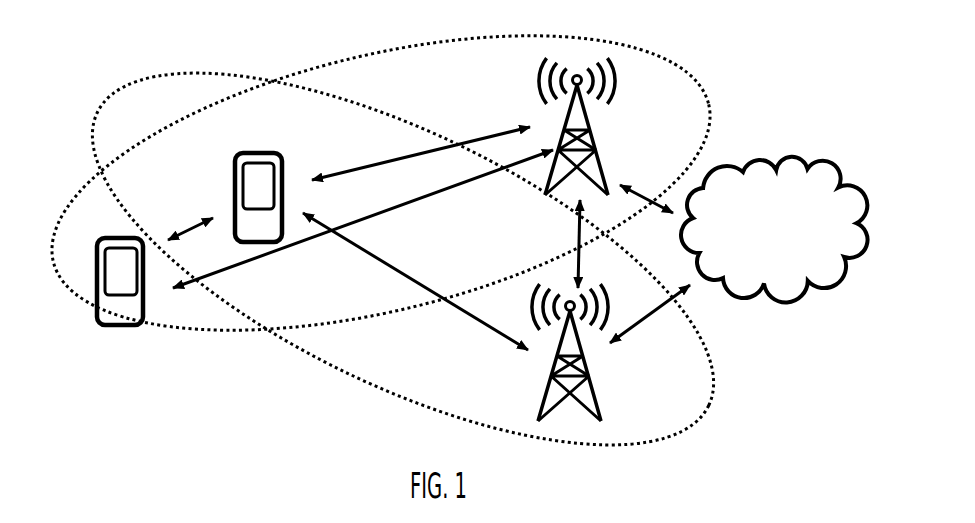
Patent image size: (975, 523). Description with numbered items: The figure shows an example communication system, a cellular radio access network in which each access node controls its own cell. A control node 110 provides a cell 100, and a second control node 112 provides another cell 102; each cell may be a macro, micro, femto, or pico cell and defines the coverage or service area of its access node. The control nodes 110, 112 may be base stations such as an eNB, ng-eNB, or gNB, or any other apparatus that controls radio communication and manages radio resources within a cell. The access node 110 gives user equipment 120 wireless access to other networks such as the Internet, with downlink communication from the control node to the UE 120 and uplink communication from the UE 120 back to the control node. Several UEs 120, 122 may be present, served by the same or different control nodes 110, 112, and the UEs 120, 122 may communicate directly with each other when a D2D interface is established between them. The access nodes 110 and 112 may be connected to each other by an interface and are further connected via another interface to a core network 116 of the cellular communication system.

The cell 100 is at (380, 52).
The cell 102 is at (172, 73).
The control node 110 is at (599, 138).
The control node 112 is at (598, 385).
The core network 116 is at (774, 230).
The user equipment 120 is at (240, 155).
The user equipment 122 is at (100, 240).